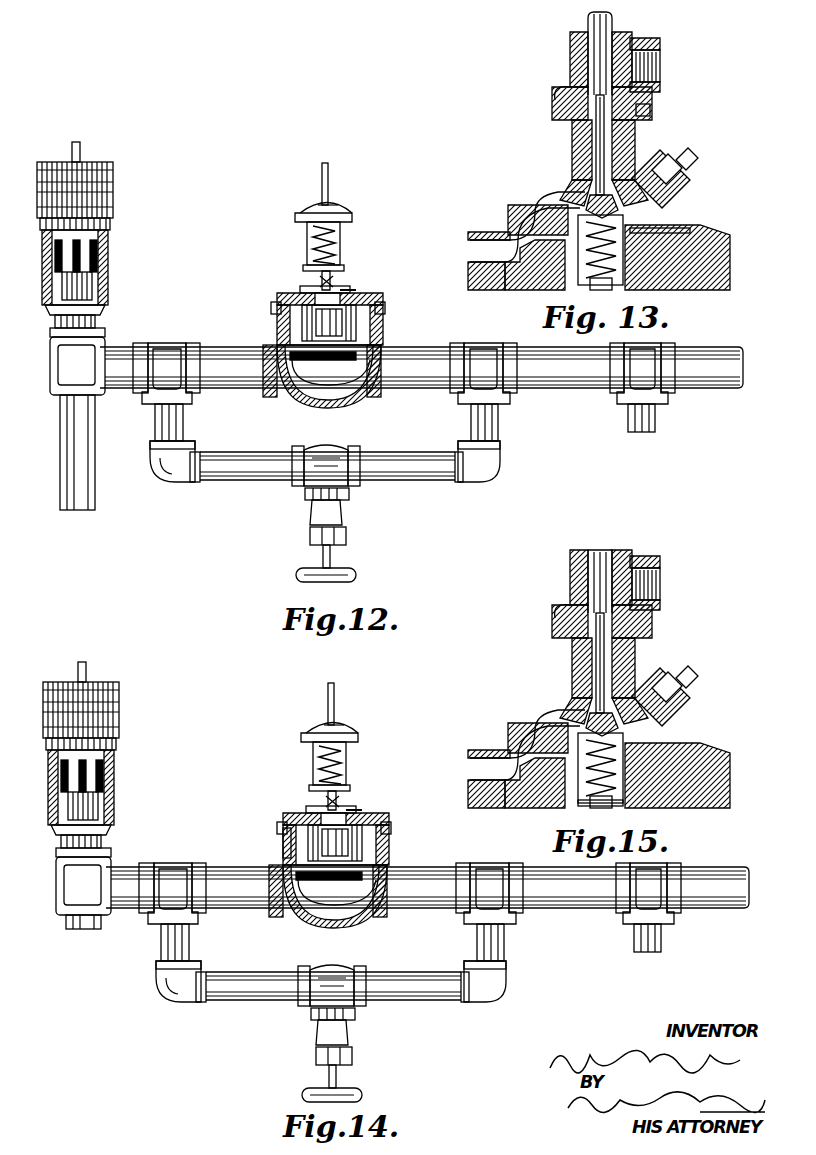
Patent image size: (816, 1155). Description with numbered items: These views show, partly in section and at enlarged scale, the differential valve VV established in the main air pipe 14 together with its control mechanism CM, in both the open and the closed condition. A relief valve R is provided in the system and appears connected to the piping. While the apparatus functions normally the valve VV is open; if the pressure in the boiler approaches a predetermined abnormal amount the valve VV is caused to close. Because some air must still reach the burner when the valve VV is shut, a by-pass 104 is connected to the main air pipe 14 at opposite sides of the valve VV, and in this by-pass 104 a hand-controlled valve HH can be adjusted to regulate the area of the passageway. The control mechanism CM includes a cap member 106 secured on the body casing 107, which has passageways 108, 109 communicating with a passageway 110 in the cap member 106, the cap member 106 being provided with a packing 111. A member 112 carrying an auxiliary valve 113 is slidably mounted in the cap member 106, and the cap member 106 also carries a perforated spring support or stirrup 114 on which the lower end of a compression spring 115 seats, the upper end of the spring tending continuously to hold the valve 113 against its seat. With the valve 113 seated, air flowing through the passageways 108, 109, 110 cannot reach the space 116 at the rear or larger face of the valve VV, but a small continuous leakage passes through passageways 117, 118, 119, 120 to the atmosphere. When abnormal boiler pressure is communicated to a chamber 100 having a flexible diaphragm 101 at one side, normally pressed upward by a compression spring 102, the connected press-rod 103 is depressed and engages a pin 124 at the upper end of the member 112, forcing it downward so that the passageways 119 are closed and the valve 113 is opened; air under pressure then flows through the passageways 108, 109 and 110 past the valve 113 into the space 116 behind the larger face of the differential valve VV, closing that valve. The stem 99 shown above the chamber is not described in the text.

In FIG. 12, the main air pipe 14 is at (556, 391).
In FIG. 14, the main air pipe 14 is at (427, 871).
In FIG. 12, the relief valve R is at (113, 228).
In FIG. 14, the relief valve R is at (91, 759).
In FIG. 12, the adjusting stem 99 is at (329, 180).
In FIG. 12, the chamber 100 is at (339, 210).
In FIG. 14, the chamber 100 is at (345, 721).
In FIG. 12, the flexible diaphragm 101 is at (341, 230).
In FIG. 14, the flexible diaphragm 101 is at (356, 762).
In FIG. 12, the compression spring 102 is at (306, 231).
In FIG. 14, the compression spring 102 is at (301, 764).
In FIG. 12, the press-rod 103 is at (344, 268).
In FIG. 14, the press-rod 103 is at (352, 778).
In FIG. 12, the control mechanism CM is at (337, 282).
In FIG. 14, the control mechanism CM is at (362, 800).
In FIG. 13, the control mechanism CM is at (572, 150).
In FIG. 15, the control mechanism CM is at (585, 668).
In FIG. 12, the by-pass 104 is at (233, 458).
In FIG. 14, the by-pass 104 is at (333, 973).
In FIG. 12, the hand-controlled valve HH is at (349, 488).
In FIG. 14, the hand-controlled valve HH is at (345, 1033).
In FIG. 12, the cap member 106 is at (311, 291).
In FIG. 14, the cap member 106 is at (310, 796).
In FIG. 13, the cap member 106 is at (508, 216).
In FIG. 15, the cap member 106 is at (514, 738).
In FIG. 12, the body casing 107 is at (370, 330).
In FIG. 14, the body casing 107 is at (368, 830).
In FIG. 13, the body casing 107 is at (718, 268).
In FIG. 15, the body casing 107 is at (698, 775).
In FIG. 12, the passageway 108 is at (277, 314).
In FIG. 14, the passageway 108 is at (312, 843).
In FIG. 12, the passageway 109 is at (281, 296).
In FIG. 14, the passageway 109 is at (311, 813).
In FIG. 13, the passageway 109 is at (468, 238).
In FIG. 15, the passageway 109 is at (499, 779).
In FIG. 13, the passageway 110 is at (532, 204).
In FIG. 15, the passageway 110 is at (527, 744).
In FIG. 13, the packing 111 is at (558, 100).
In FIG. 15, the packing 111 is at (545, 602).
In FIG. 13, the auxiliary valve member 112 is at (605, 143).
In FIG. 15, the auxiliary valve member 112 is at (646, 663).
In FIG. 13, the auxiliary valve 113 is at (640, 178).
In FIG. 15, the auxiliary valve 113 is at (682, 704).
In FIG. 13, the perforated spring support or stirrup 114 is at (625, 285).
In FIG. 15, the perforated spring support or stirrup 114 is at (638, 780).
In FIG. 13, the compression spring 115 is at (690, 232).
In FIG. 15, the compression spring 115 is at (562, 815).
In FIG. 14, the space 116 is at (232, 836).
In FIG. 13, the passageway 117 is at (578, 180).
In FIG. 15, the passageway 117 is at (584, 713).
In FIG. 13, the passageway 118 is at (651, 108).
In FIG. 13, the passageways 119 is at (660, 90).
In FIG. 15, the passageways 119 is at (635, 621).
In FIG. 13, the passageway 120 is at (661, 60).
In FIG. 15, the passageway 120 is at (674, 583).
In FIG. 13, the pin 124 is at (614, 25).
In FIG. 15, the pin 124 is at (634, 570).
In FIG. 12, the differential valve VV is at (383, 334).
In FIG. 14, the differential valve VV is at (347, 876).